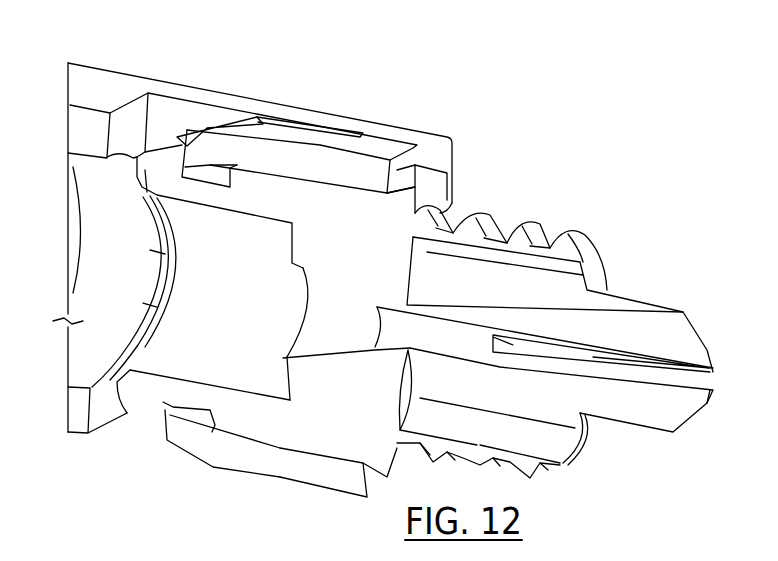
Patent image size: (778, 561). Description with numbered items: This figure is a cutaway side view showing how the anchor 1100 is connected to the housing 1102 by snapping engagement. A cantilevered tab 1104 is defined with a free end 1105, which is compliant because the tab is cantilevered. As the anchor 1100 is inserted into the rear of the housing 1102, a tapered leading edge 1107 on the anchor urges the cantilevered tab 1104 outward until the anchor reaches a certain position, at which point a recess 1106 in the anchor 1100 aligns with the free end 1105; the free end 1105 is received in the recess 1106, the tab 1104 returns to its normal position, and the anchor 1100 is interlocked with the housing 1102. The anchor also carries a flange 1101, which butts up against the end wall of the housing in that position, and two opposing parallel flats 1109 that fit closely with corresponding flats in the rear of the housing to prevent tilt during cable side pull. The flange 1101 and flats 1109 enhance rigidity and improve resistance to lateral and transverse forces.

The anchor 1100 is at (586, 187).
The flange 1101 is at (420, 173).
The housing 1102 is at (72, 413).
The cantilevered tab 1104 is at (303, 133).
The free end 1105 is at (212, 147).
The recess 1106 is at (187, 413).
The tapered leading edge 1107 is at (152, 165).
The opposing parallel flats 1109 is at (267, 447).